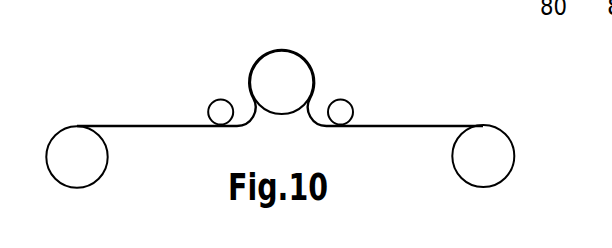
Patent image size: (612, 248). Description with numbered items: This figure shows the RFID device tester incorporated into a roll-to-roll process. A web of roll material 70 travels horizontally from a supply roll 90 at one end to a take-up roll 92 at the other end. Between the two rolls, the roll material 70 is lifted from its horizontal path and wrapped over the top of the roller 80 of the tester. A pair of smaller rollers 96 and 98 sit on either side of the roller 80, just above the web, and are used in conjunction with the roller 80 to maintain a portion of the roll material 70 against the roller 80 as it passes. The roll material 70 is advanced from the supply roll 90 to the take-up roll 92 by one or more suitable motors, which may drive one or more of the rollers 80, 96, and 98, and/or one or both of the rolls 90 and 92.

The roll material 70 is at (112, 126).
The roller 80 is at (288, 75).
The supply roll 90 is at (76, 170).
The take-up roll 92 is at (479, 167).
The roller 96 is at (209, 109).
The roller 98 is at (339, 109).